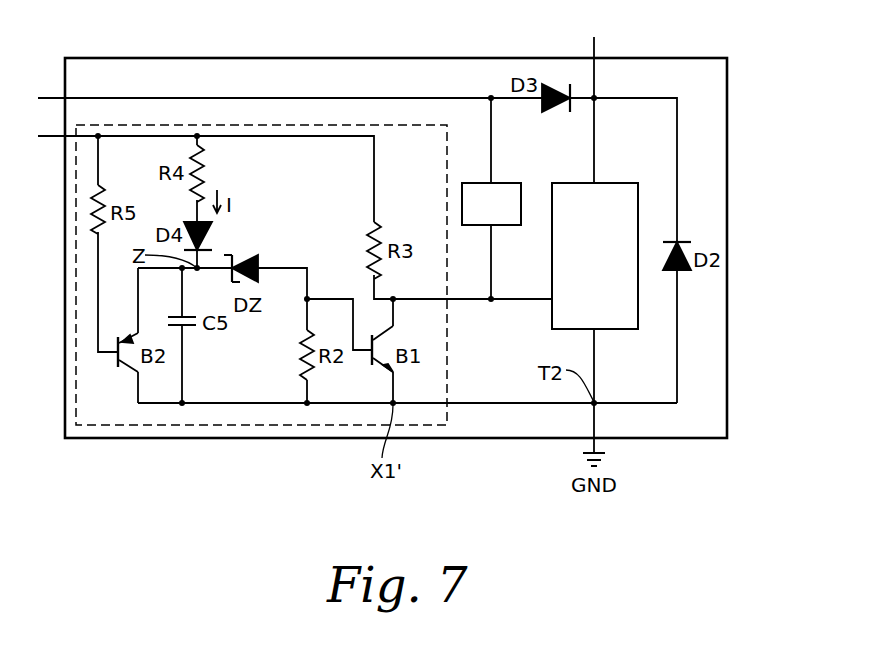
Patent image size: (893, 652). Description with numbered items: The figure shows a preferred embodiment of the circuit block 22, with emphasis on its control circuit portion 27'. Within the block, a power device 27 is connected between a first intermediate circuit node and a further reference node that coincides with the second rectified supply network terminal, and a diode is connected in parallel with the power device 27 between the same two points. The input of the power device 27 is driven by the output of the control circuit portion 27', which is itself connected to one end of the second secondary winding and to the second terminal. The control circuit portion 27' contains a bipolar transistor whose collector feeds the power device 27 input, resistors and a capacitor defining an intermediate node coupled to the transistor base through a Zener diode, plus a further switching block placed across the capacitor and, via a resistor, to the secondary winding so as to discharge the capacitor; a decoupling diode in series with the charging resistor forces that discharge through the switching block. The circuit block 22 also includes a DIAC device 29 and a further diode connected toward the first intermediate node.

The circuit block 22 is at (727, 80).
The power device 27 is at (608, 239).
The control circuit portion 27' is at (261, 220).
The DIAC device 29 is at (505, 183).